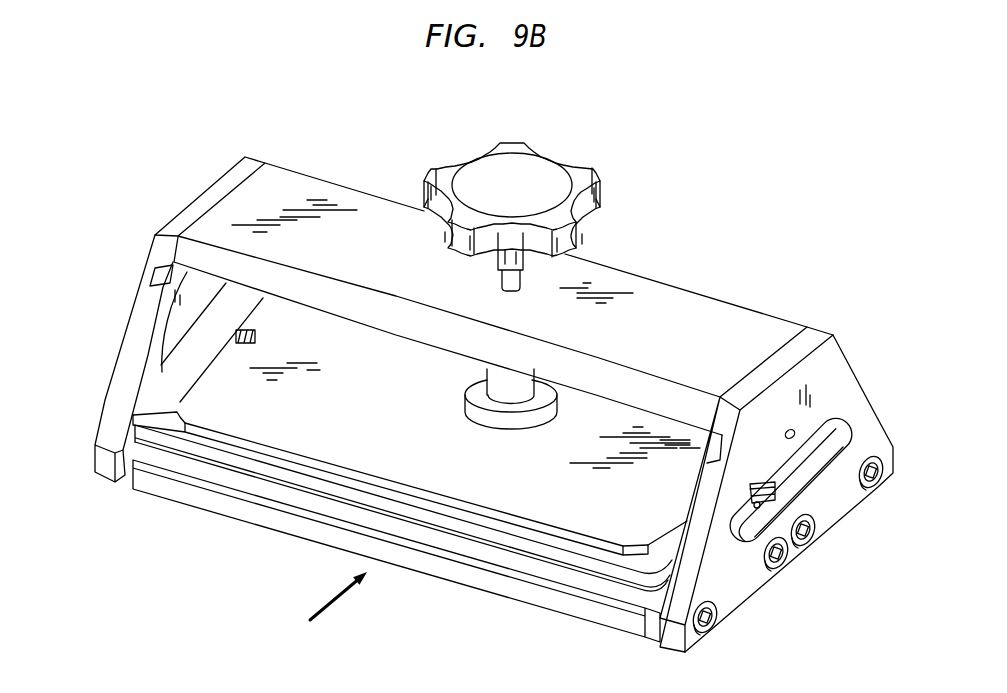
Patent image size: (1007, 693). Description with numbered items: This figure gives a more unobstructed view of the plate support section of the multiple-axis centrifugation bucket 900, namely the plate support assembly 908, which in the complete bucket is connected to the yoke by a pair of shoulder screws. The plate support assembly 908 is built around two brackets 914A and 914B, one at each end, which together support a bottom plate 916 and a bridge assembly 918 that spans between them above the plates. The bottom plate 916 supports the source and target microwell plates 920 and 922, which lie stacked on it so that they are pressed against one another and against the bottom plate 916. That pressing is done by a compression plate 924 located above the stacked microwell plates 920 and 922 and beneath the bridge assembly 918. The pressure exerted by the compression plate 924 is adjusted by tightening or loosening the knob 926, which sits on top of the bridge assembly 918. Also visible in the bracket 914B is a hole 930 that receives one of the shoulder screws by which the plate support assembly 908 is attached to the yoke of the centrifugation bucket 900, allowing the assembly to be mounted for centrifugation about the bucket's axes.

The centrifugation bucket 900 is at (800, 176).
The plate support assembly 908 is at (320, 607).
The bracket 914A is at (212, 187).
The bracket 914B is at (748, 580).
The bottom plate 916 is at (282, 520).
The bridge assembly 918 is at (725, 314).
The source microwell plate 920 is at (532, 548).
The target microwell plate 922 is at (467, 548).
The compression plate 924 is at (250, 409).
The knob 926 is at (530, 172).
The hole 930 is at (794, 434).